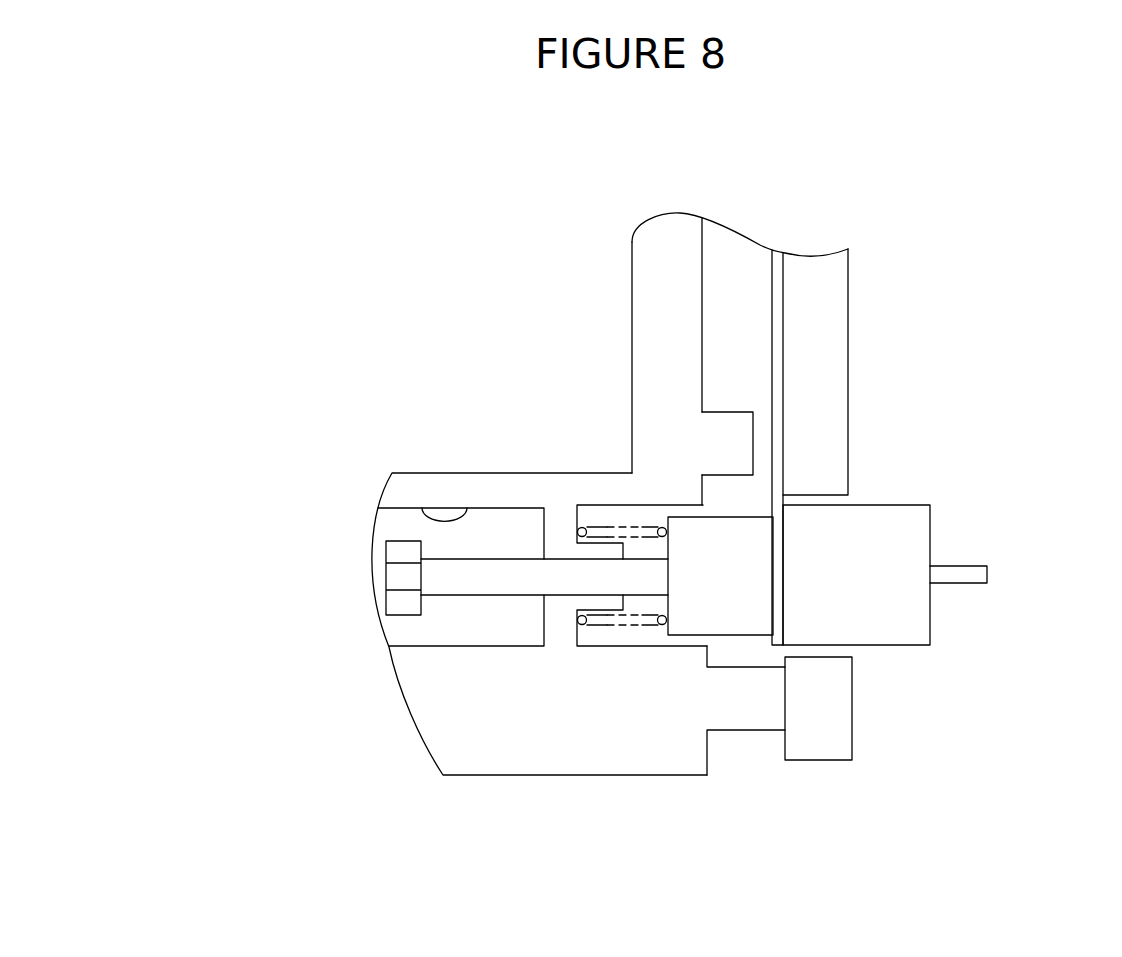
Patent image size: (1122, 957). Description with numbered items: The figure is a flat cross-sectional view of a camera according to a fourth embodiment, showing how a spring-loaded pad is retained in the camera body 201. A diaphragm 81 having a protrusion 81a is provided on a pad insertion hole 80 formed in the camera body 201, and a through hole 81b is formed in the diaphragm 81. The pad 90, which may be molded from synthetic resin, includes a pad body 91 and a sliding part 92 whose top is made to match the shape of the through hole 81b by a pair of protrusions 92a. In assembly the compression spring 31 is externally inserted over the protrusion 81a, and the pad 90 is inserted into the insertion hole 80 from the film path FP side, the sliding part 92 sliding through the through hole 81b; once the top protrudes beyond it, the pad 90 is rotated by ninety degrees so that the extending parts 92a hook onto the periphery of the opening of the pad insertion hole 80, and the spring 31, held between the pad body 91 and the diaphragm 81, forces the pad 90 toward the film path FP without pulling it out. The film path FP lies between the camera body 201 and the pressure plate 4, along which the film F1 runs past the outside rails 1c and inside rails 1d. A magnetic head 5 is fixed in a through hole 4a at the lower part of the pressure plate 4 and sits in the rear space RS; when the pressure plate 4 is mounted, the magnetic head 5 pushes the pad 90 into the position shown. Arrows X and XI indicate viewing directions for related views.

The pad insertion hole 80 is at (422, 507).
The diaphragm 81 is at (533, 528).
The protrusion 81a is at (597, 552).
The through hole 81b is at (560, 590).
The compression spring 31 is at (660, 518).
The sliding part 92 is at (472, 595).
The protrusions 92a is at (398, 552).
The pad 90 is at (685, 636).
The pad body 91 is at (727, 635).
The outside rails 1c is at (745, 718).
The inside rails 1d is at (732, 425).
The camera body 201 is at (618, 280).
The film path FP is at (732, 252).
The film F1 is at (777, 280).
The pressure plate 4 is at (837, 332).
The through hole 4a is at (840, 499).
The magnetic head 5 is at (930, 623).
The viewing direction X is at (277, 607).
The viewing direction XI is at (1007, 532).
The rear space RS is at (955, 739).